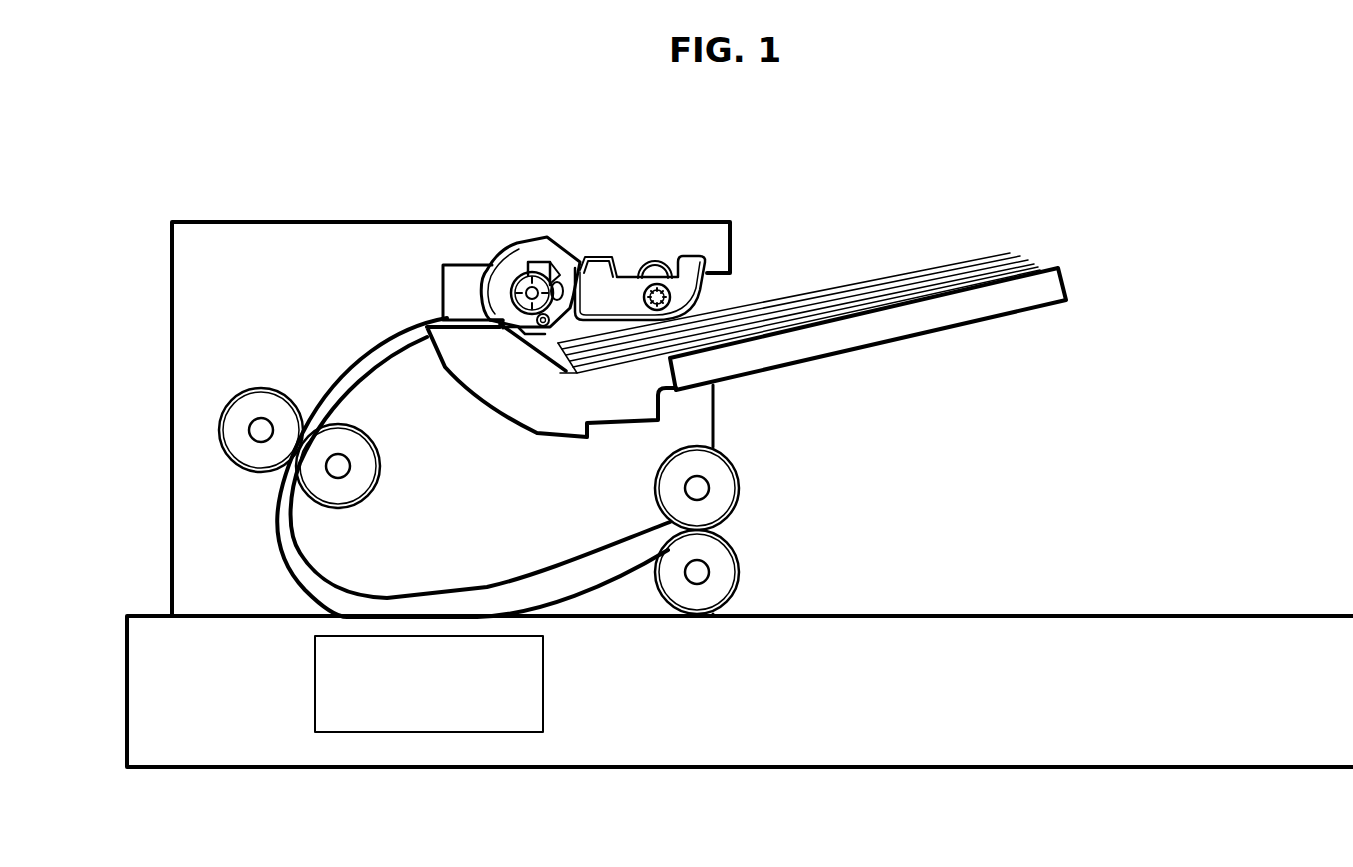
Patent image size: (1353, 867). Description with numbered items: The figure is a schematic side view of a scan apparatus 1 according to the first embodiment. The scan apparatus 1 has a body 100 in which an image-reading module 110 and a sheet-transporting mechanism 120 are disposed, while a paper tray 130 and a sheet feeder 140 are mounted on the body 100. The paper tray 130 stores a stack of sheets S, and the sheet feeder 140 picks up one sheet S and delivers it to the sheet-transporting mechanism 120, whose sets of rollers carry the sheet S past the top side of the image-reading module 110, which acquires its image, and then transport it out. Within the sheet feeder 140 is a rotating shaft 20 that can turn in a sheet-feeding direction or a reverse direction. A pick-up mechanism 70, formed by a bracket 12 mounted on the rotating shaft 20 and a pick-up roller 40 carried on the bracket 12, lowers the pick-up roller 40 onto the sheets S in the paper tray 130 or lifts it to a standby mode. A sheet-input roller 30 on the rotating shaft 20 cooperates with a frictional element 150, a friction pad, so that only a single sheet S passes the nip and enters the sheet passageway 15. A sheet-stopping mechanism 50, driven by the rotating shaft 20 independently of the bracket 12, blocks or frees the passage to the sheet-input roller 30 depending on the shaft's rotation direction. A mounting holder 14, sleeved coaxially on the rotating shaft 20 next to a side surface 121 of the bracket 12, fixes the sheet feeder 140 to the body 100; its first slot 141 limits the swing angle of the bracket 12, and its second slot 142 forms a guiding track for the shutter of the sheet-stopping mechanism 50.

The scan apparatus 1 is at (704, 123).
The body 100 is at (257, 222).
The image-reading module 110 is at (532, 690).
The sheet-transporting mechanism 120 is at (337, 435).
The sheet passageway 15 is at (387, 338).
The side surface 121 is at (472, 252).
The rotating shaft 20 is at (505, 270).
The mounting holder 14 is at (543, 243).
The first slot 141 is at (549, 262).
The second slot 142 is at (566, 292).
The sheet-input roller 30 is at (490, 326).
The frictional element 150 is at (506, 336).
The sheet-stopping mechanism 50 is at (557, 360).
The bracket 12 is at (603, 265).
The pick-up roller 40 is at (658, 262).
The sheet feeder 140 is at (697, 244).
The sheet S is at (740, 310).
The paper tray 130 is at (860, 338).
The pick-up mechanism 70 is at (922, 162).